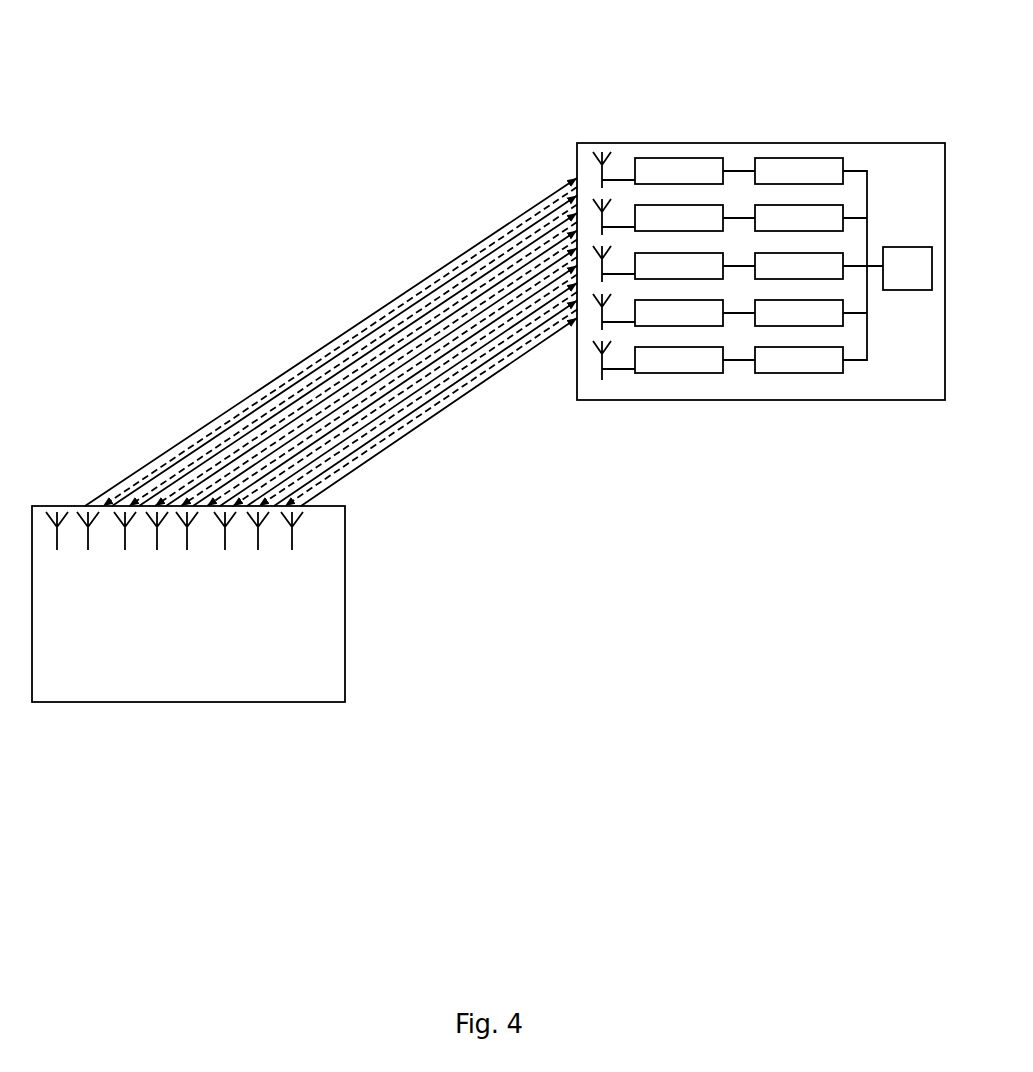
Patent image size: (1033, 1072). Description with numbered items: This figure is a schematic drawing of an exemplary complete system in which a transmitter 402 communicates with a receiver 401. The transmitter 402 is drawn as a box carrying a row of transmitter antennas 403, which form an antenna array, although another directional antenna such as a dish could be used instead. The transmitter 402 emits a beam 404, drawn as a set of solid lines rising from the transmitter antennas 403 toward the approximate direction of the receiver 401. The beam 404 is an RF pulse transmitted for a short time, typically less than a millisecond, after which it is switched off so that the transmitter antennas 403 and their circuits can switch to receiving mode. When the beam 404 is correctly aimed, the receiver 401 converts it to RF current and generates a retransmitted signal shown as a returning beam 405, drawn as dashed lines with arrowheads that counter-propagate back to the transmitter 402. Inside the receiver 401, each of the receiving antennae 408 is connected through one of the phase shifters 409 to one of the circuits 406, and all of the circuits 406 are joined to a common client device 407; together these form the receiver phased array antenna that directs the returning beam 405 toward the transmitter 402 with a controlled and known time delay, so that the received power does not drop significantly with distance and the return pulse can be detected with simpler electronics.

The receiver 401 is at (787, 122).
The transmitter 402 is at (187, 702).
The transmitter antennas 403 is at (307, 528).
The beam 404 is at (205, 380).
The returning beam 405 is at (468, 212).
The circuits 406 is at (802, 380).
The client device 407 is at (907, 290).
The antennae 408 is at (604, 382).
The phase shifters 409 is at (682, 380).